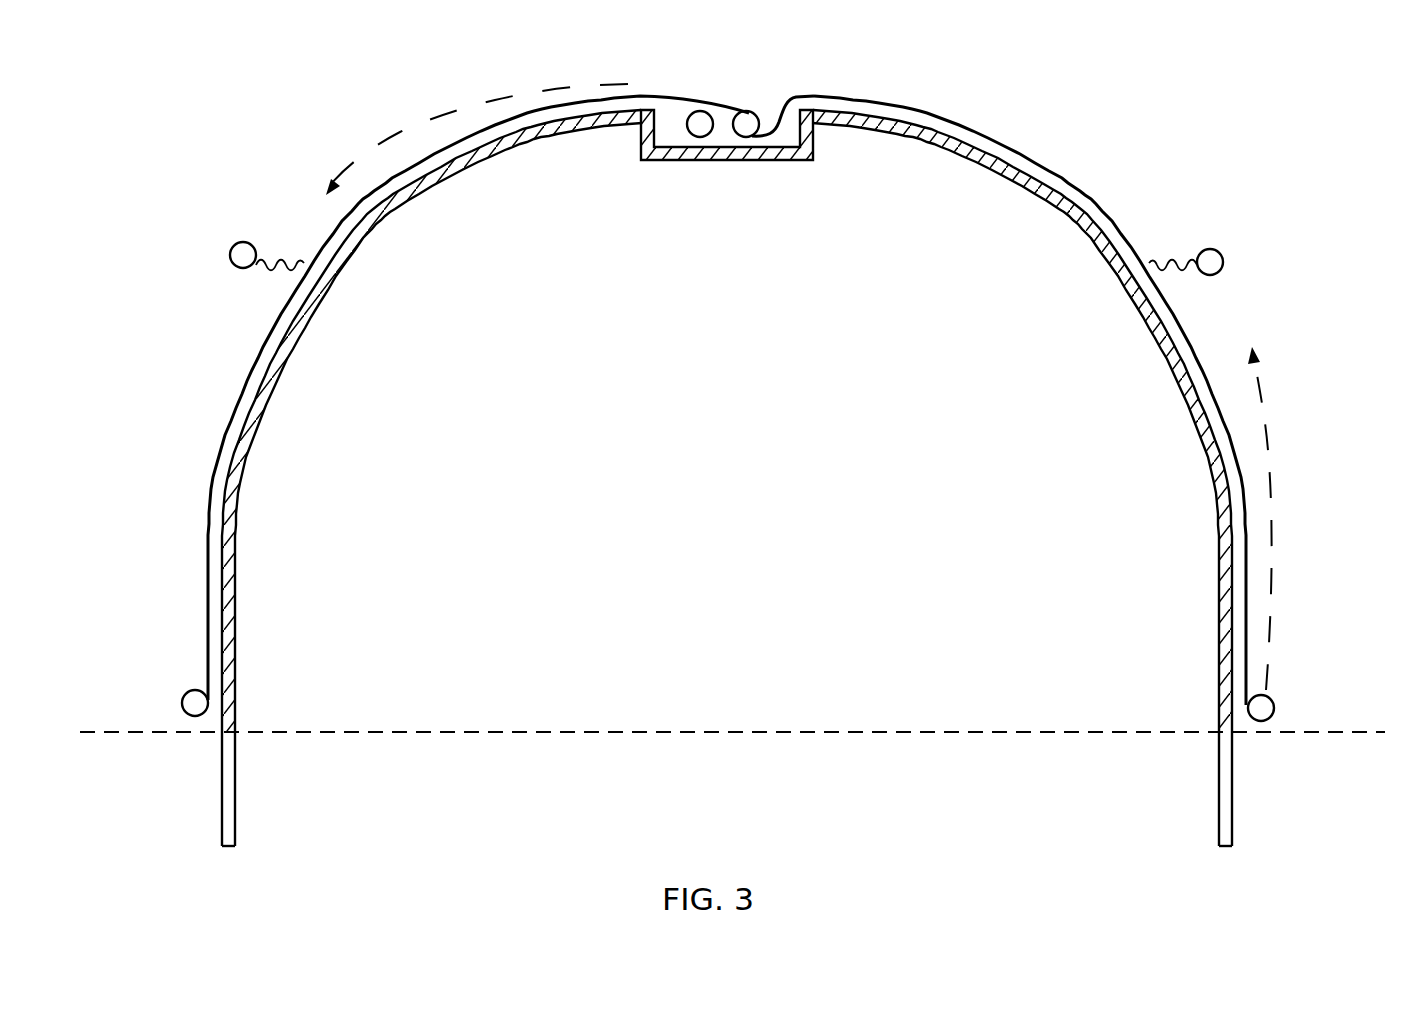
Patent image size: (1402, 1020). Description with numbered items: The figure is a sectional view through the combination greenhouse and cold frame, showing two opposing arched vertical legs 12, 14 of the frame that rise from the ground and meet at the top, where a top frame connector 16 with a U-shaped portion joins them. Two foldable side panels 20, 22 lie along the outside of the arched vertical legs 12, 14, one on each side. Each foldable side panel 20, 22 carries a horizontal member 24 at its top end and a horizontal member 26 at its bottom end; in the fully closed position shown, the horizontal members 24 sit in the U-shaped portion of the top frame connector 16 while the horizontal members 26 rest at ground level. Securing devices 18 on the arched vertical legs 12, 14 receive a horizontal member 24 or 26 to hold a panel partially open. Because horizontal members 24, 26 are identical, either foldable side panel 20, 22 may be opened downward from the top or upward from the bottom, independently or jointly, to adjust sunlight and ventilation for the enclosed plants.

The arched vertical leg 12 is at (727, 478).
The arched vertical leg 14 is at (405, 204).
The top frame connector 16 is at (676, 160).
The securing device 18 is at (1170, 362).
The foldable side panel 20 is at (920, 114).
The foldable side panel 22 is at (455, 145).
The horizontal member 24 is at (749, 118).
The horizontal member 26 is at (187, 697).